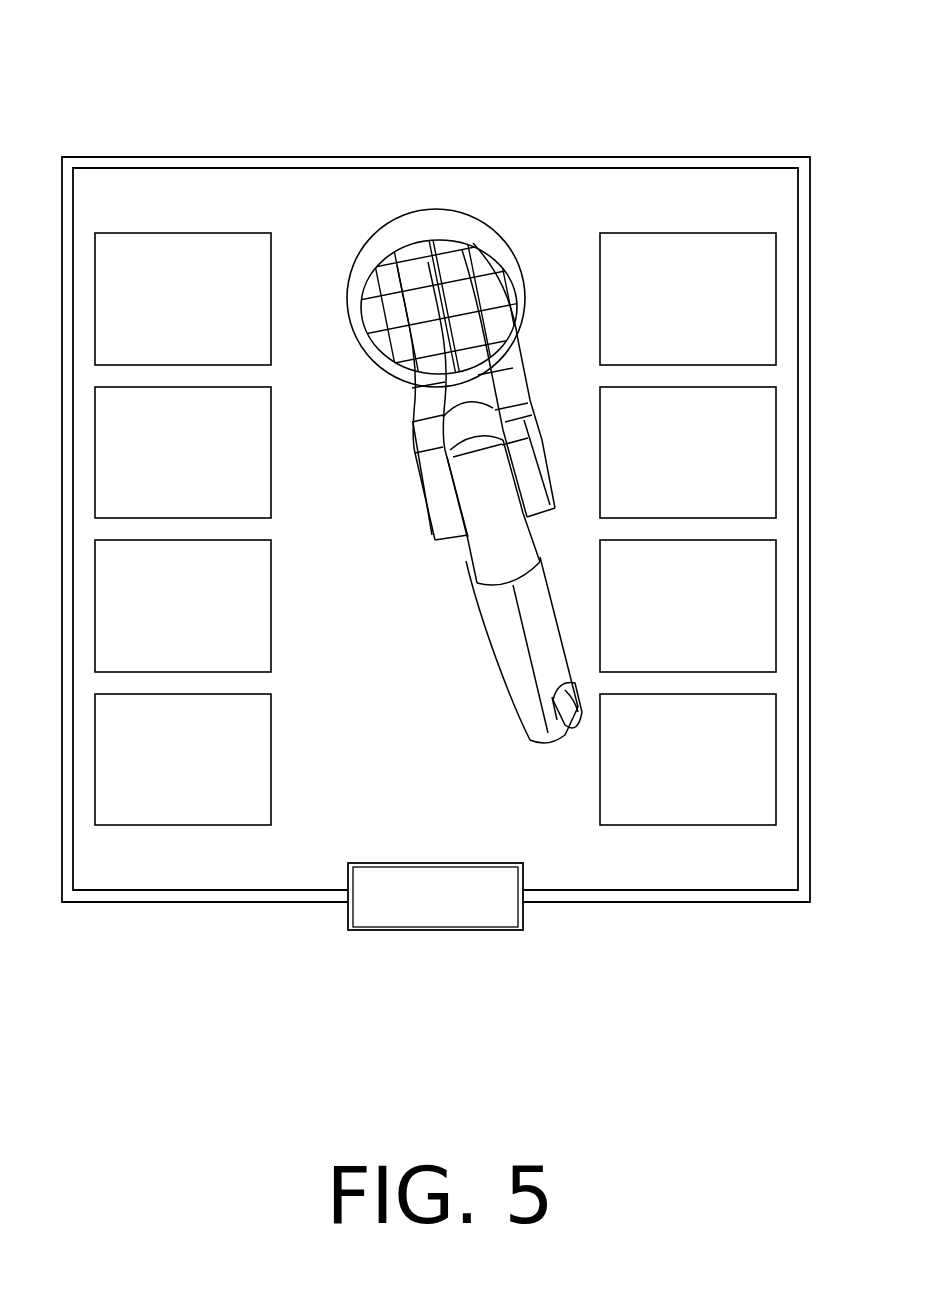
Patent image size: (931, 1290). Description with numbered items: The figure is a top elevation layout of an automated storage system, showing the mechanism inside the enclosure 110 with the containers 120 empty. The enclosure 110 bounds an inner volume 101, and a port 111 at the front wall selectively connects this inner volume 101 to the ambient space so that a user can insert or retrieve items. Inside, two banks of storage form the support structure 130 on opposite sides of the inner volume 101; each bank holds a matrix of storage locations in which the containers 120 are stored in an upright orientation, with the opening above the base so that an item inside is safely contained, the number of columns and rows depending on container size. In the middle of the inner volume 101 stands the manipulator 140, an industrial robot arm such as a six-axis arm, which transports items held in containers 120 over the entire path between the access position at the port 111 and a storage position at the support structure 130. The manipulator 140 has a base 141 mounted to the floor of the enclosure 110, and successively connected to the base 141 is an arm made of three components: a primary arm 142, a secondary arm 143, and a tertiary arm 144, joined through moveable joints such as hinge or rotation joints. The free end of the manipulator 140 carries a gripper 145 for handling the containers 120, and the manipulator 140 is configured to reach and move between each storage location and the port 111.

The inner volume 101 is at (397, 797).
The enclosure 110 is at (343, 158).
The port 111 is at (435, 903).
The container 120 is at (435, 529).
The support structure 130 is at (84, 213).
The manipulator 140 is at (510, 218).
The base 141 is at (421, 230).
The primary arm 142 is at (428, 463).
The secondary arm 143 is at (485, 547).
The tertiary arm 144 is at (500, 652).
The gripper 145 is at (563, 717).